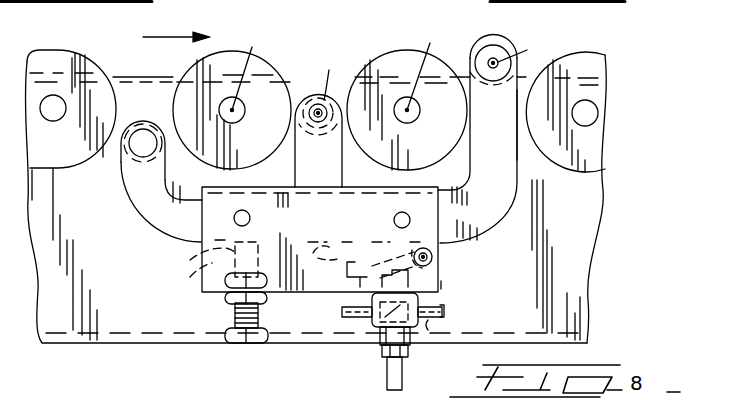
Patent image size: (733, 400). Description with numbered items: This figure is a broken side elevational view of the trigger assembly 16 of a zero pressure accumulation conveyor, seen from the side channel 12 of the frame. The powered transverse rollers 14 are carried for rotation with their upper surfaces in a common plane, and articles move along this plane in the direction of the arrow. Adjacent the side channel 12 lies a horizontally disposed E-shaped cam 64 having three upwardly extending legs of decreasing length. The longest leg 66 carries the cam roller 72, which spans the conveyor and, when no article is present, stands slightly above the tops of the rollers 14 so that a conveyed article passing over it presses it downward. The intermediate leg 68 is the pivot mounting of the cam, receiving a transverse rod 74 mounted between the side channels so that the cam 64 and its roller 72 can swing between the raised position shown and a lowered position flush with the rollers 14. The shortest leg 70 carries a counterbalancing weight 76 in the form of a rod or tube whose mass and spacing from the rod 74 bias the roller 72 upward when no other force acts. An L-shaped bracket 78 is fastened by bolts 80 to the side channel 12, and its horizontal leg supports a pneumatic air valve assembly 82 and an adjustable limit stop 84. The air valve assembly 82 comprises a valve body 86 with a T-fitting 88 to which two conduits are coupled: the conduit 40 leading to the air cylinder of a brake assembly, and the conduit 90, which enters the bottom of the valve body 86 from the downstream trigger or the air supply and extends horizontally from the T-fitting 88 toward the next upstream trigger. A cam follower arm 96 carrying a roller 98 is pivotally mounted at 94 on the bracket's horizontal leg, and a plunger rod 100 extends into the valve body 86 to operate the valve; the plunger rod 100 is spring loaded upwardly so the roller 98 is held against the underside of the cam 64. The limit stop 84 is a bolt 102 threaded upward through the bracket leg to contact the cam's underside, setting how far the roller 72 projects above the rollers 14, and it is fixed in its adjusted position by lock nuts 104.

The side channel 12 is at (563, 270).
The transverse rollers 14 is at (372, 62).
The trigger assembly 16 is at (462, 262).
The conduit 40 is at (443, 308).
The E-shaped cam 64 is at (493, 203).
The longest leg 66 is at (496, 163).
The intermediate leg 68 is at (326, 170).
The shortest leg 70 is at (137, 181).
The cam roller 72 is at (485, 34).
The rod 74 is at (316, 108).
The counterbalancing weight 76 is at (148, 92).
The L-shaped bracket 78 is at (212, 266).
The bolts 80 is at (247, 215).
The pneumatic air valve assembly 82 is at (449, 298).
The adjustable limit stop 84 is at (215, 308).
The valve body 86 is at (429, 327).
The T-fitting 88 is at (357, 328).
The conduit 90 is at (342, 309).
The pivot mounting 94 is at (323, 265).
The cam follower arm 96 is at (368, 243).
The roller 98 is at (442, 249).
The plunger rod 100 is at (441, 285).
The bolt 102 is at (196, 256).
The lock nuts 104 is at (226, 296).